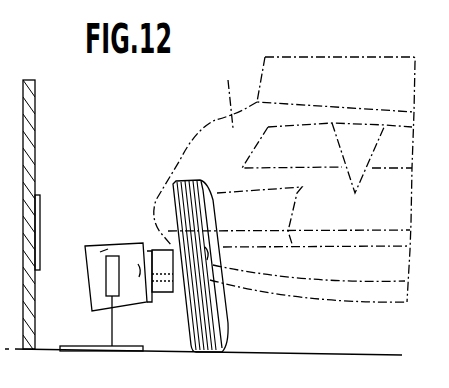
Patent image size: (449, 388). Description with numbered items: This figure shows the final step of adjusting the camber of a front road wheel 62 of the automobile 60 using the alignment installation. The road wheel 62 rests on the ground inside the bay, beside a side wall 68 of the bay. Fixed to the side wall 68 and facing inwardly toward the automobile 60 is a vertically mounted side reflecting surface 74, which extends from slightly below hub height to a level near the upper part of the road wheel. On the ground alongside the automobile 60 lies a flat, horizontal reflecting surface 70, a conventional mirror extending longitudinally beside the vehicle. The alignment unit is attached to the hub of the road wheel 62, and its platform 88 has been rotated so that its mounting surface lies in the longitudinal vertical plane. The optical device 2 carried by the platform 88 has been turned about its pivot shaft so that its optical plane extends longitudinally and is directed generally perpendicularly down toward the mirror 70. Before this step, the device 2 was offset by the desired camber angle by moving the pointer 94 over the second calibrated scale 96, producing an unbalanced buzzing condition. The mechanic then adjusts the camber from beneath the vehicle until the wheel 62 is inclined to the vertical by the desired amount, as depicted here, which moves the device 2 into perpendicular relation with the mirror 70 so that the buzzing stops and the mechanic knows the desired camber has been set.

The device 2 is at (106, 280).
The automobile 60 is at (230, 95).
The front road wheel 62 is at (183, 182).
The side wall of the bay 68 is at (35, 118).
The reflecting surface 70 is at (135, 345).
The side reflecting surface 74 is at (40, 197).
The platform 88 is at (92, 252).
The pointer 94 is at (118, 251).
The second scale 96 is at (116, 253).